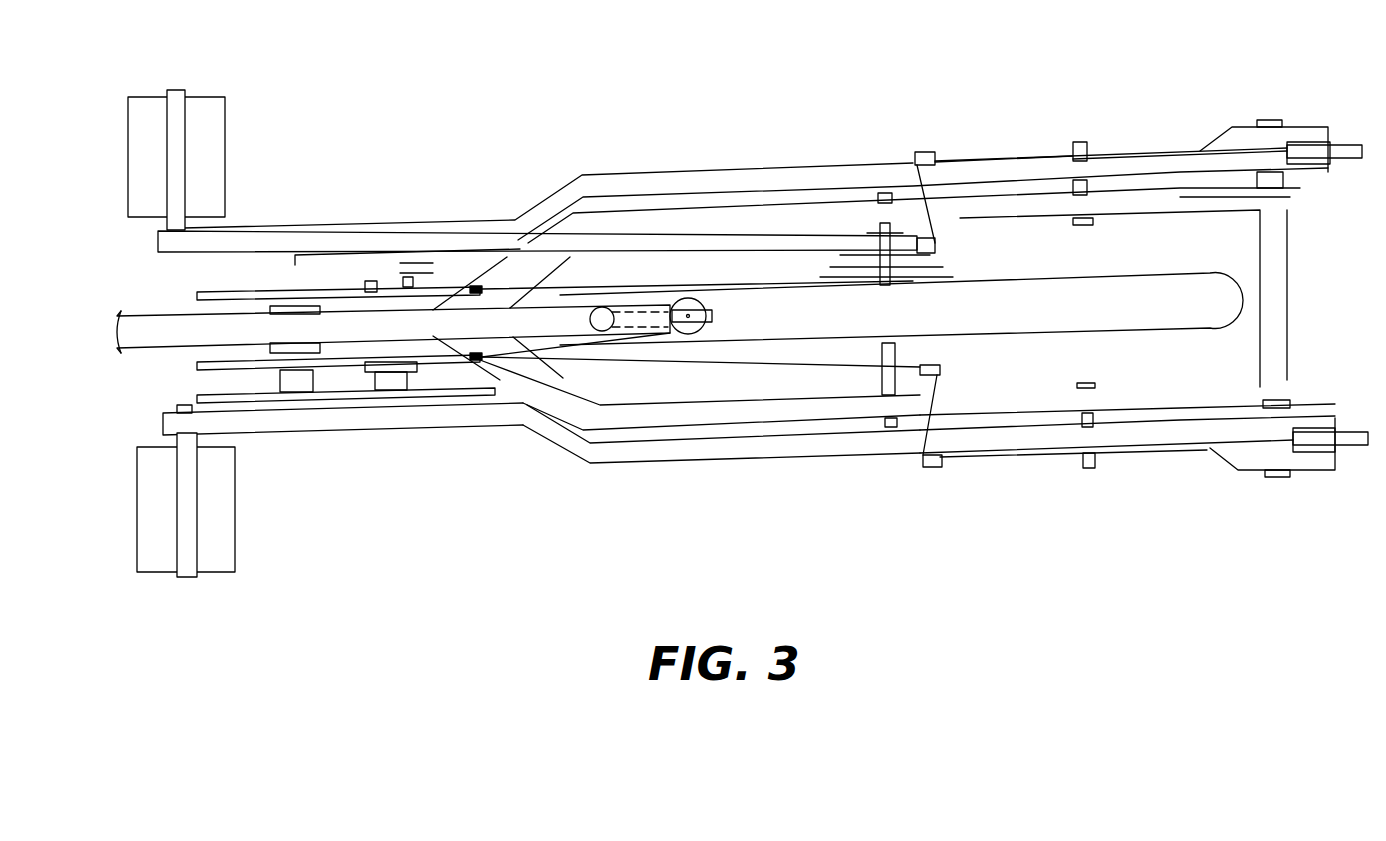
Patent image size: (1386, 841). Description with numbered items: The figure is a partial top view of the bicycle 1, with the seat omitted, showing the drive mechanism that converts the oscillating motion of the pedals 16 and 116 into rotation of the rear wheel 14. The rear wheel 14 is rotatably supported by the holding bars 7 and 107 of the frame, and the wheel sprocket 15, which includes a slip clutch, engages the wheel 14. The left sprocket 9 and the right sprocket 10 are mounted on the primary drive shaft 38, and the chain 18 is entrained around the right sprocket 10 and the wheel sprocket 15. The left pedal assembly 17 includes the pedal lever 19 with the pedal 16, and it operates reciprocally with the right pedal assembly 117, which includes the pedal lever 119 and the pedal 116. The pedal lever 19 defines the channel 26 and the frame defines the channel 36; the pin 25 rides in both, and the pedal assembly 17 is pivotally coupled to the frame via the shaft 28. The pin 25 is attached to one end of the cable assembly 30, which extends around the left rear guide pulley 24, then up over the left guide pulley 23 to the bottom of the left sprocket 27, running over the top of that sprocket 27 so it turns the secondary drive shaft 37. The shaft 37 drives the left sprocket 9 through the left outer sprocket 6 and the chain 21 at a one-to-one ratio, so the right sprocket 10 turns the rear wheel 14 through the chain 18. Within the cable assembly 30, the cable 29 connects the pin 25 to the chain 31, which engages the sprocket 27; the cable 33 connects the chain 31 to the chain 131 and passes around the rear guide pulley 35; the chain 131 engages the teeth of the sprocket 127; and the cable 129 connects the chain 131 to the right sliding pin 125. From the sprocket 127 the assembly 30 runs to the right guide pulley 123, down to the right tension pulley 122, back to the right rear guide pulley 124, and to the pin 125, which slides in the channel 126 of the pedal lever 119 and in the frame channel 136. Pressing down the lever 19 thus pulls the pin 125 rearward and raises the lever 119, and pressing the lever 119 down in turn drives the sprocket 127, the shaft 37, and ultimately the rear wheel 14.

The bicycle 1 is at (472, 690).
The left outer sprocket 6 is at (237, 413).
The holding bar 7 is at (1212, 385).
The left sprocket 9 is at (473, 397).
The right sprocket 10 is at (295, 257).
The rear wheel 14 is at (1167, 273).
The wheel sprocket 15 is at (945, 268).
The pedal 16 is at (237, 538).
The left pedal assembly 17 is at (843, 463).
The chain 18 is at (620, 240).
The pedal lever 19 is at (672, 465).
The chain 21 is at (353, 412).
The left guide pulley 23 is at (942, 370).
The left rear guide pulley 24 is at (1335, 432).
The pin 25 is at (1090, 382).
The channel 26 is at (1053, 440).
The left sprocket 27 is at (212, 387).
The shaft 28 is at (1277, 478).
The cable 29 is at (702, 368).
The cable assembly 30 is at (1008, 143).
The chain 31 is at (200, 368).
The cable 33 is at (512, 347).
The rear guide pulley 35 is at (705, 303).
The channel 36 is at (1040, 408).
The secondary drive shaft 37 is at (296, 410).
The primary drive shaft 38 is at (397, 398).
The holding bar 107 is at (1160, 218).
The pedal 116 is at (225, 112).
The right pedal assembly 117 is at (776, 160).
The pedal lever 119 is at (680, 170).
The right tension pulley 122 is at (922, 150).
The right guide pulley 123 is at (957, 247).
The right rear guide pulley 124 is at (1340, 143).
The right sliding pin 125 is at (1088, 140).
The channel 126 is at (990, 170).
The sprocket 127 is at (228, 288).
The cable 129 is at (573, 277).
The chain 131 is at (197, 296).
The channel 136 is at (1050, 210).